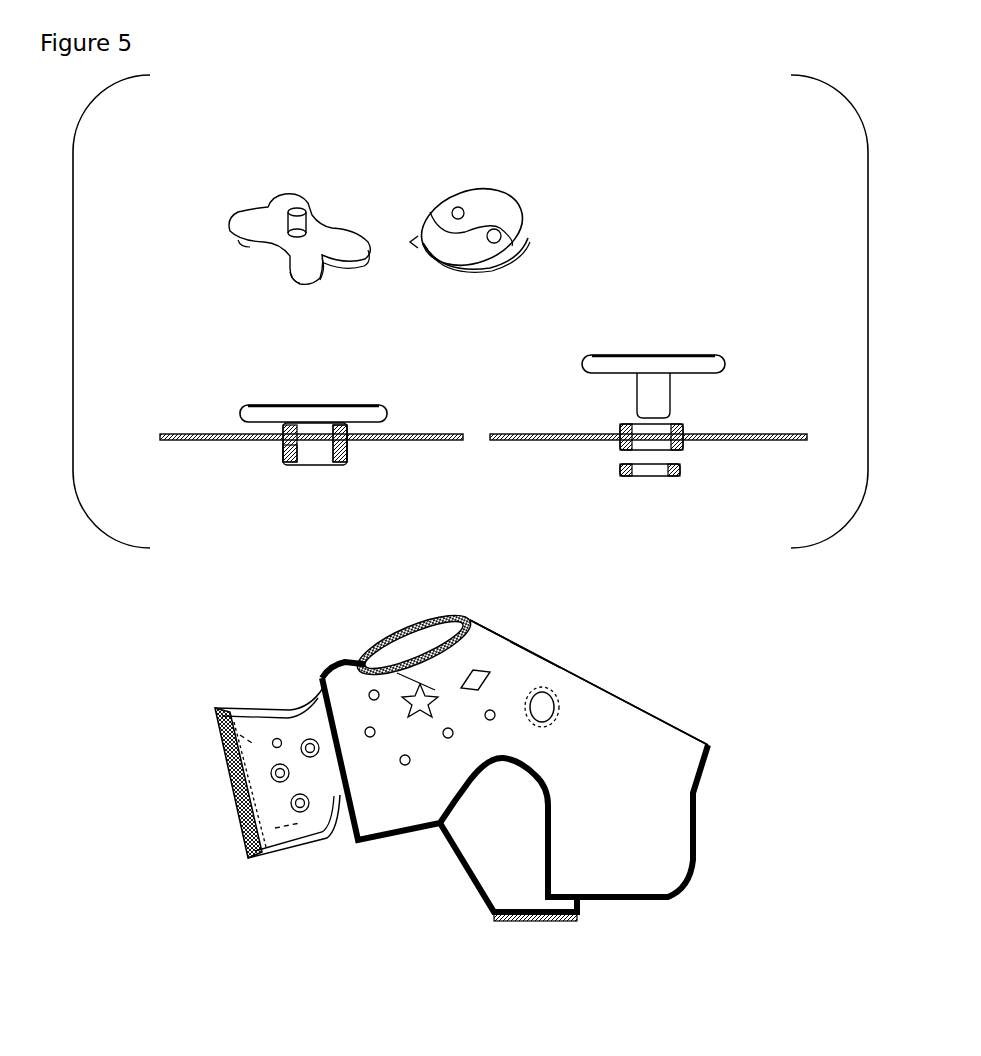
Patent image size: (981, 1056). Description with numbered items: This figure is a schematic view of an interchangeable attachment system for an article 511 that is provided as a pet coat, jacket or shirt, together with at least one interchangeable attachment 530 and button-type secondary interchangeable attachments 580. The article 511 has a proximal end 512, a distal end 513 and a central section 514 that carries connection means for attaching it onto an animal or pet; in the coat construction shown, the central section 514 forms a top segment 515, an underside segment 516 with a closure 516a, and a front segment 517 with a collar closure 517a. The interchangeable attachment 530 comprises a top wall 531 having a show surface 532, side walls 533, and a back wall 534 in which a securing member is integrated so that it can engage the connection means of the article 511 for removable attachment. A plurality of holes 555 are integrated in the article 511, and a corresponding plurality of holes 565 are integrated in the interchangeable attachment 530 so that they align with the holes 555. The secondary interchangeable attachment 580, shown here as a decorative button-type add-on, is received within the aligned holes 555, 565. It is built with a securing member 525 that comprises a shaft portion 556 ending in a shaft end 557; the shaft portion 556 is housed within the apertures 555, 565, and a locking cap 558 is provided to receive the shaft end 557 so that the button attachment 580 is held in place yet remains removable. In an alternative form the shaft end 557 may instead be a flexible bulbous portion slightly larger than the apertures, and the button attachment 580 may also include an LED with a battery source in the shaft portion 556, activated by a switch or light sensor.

The secondary interchangeable attachment 580 is at (172, 280).
The interchangeable attachment 530 is at (210, 428).
The article 511 is at (403, 440).
The securing member 525 is at (285, 435).
The holes 555 is at (287, 450).
The holes 565 is at (356, 442).
The shaft portion 556 is at (680, 385).
The shaft end 557 is at (683, 468).
The locking cap 558 is at (627, 477).
The proximal end 512 is at (474, 612).
The top segment 515 is at (500, 637).
The central section 514 is at (517, 660).
The distal end 513 is at (715, 753).
The top wall 531 is at (635, 831).
The show surface 532 is at (786, 826).
The side walls 533 is at (688, 893).
The back wall 534 is at (645, 922).
The front segment 517 is at (243, 857).
The collar closure 517a is at (217, 805).
The underside segment 516 is at (473, 893).
The closure 516a is at (523, 923).